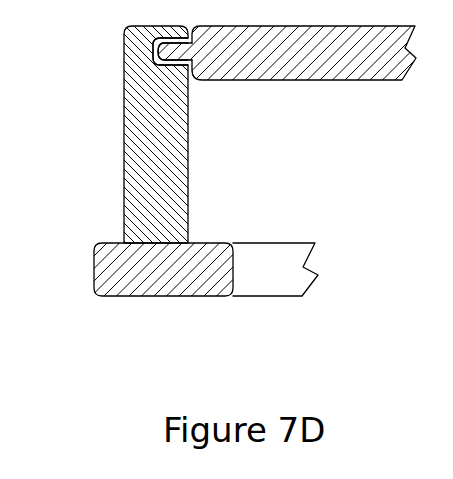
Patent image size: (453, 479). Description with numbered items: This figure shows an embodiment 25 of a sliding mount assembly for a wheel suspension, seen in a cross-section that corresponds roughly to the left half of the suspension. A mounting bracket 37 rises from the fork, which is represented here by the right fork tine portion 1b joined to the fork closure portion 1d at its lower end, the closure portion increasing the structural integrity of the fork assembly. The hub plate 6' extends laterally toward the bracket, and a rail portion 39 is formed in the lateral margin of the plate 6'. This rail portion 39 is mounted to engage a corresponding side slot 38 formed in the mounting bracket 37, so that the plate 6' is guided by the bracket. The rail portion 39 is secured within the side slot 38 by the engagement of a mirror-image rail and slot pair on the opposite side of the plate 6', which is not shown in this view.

The embodiment of sliding mount assembly 25 is at (77, 174).
The mounting bracket 37 is at (187, 147).
The side slot 38 is at (158, 51).
The rail portion 39 is at (163, 51).
The plate 6' is at (287, 53).
The right fork tine portion 1b is at (178, 279).
The fork closure portion 1d is at (288, 279).